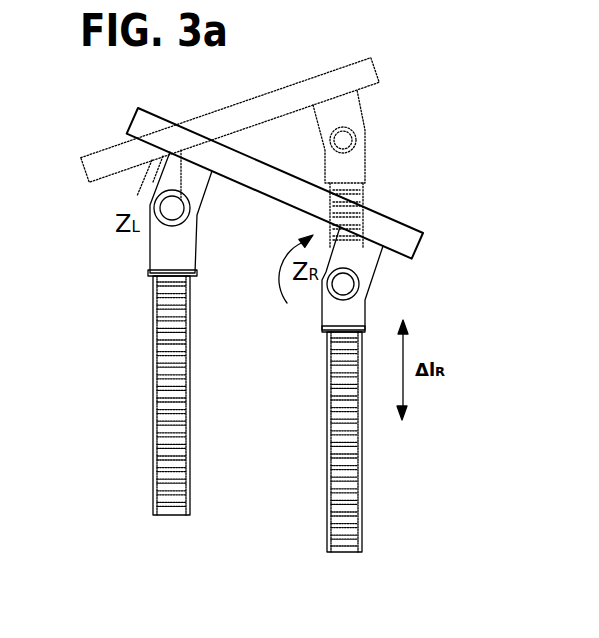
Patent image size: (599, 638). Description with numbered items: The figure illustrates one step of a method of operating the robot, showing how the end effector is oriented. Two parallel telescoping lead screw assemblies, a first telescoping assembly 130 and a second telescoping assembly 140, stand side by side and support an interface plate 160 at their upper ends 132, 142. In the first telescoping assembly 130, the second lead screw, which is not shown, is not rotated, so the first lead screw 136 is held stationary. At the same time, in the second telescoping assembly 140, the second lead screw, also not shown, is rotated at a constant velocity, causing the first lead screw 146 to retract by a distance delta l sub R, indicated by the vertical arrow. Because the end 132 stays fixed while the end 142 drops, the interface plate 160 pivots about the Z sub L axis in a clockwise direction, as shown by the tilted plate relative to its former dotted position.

The interface plate 160 is at (422, 233).
The first telescoping lead screw assembly 130 is at (178, 347).
The end of the first lead screw assembly 132 is at (150, 242).
The first lead screw of the first telescoping assembly 136 is at (155, 397).
The second telescoping lead screw assembly 140 is at (391, 393).
The end of the second lead screw assembly 142 is at (360, 313).
The first lead screw of the second telescoping assembly 146 is at (360, 467).